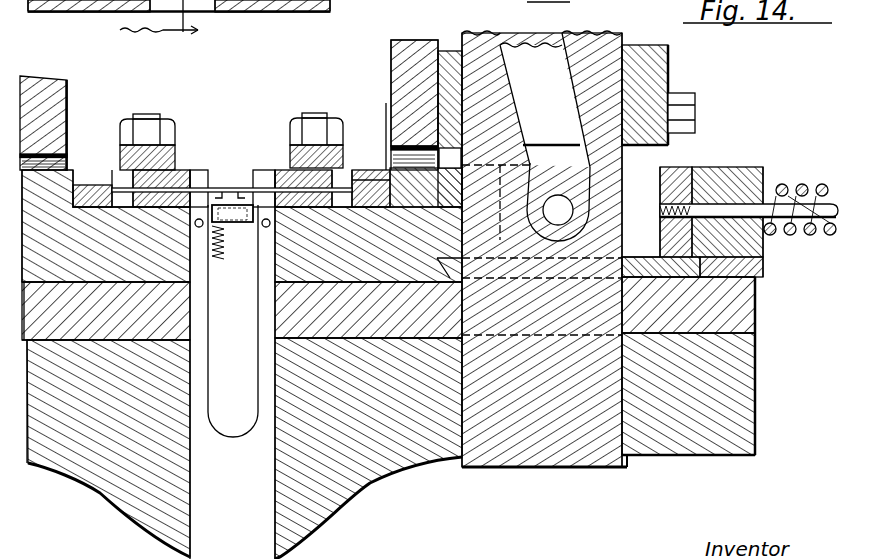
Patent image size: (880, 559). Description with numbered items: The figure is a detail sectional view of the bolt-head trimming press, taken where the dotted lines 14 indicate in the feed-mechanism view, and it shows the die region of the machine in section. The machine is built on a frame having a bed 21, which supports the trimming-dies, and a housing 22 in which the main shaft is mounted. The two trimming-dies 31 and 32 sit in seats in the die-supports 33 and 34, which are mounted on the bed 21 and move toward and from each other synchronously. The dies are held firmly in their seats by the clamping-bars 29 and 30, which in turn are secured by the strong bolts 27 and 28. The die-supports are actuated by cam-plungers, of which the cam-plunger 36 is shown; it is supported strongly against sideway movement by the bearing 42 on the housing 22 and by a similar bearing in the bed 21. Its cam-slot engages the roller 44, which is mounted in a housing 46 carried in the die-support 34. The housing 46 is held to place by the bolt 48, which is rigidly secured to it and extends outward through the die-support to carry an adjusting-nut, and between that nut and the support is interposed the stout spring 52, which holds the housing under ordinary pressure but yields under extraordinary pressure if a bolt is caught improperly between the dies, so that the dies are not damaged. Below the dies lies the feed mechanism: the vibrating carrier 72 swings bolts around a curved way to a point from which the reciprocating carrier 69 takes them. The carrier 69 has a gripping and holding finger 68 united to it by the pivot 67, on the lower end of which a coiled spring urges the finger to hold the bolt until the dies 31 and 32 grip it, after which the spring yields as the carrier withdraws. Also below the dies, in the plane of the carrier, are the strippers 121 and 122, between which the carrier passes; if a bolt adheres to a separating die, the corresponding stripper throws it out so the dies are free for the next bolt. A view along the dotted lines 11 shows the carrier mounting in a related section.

The section line 11 is at (548, 14).
The section line 14 is at (159, 32).
The bed 21 is at (320, 12).
The housing 22 is at (67, 103).
The bolt 27 is at (145, 114).
The bolt 28 is at (322, 114).
The clamping-bar 29 is at (174, 140).
The clamping-bar 30 is at (283, 137).
The trimming-die 31 is at (172, 180).
The trimming-die 32 is at (287, 172).
The die-support 33 is at (83, 217).
The die-support 34 is at (370, 190).
The cam-plunger 36 is at (593, 43).
The bearing 42 is at (656, 84).
The roller 44 is at (580, 218).
The housing 46 is at (720, 189).
The bolt 48 is at (822, 236).
The spring 52 is at (789, 236).
The pivot 67 is at (214, 270).
The gripping and holding finger 68 is at (238, 225).
The reciprocating carrier 69 is at (217, 258).
The vibrating carrier 72 is at (228, 187).
The stripper 121 is at (188, 236).
The stripper 122 is at (276, 245).